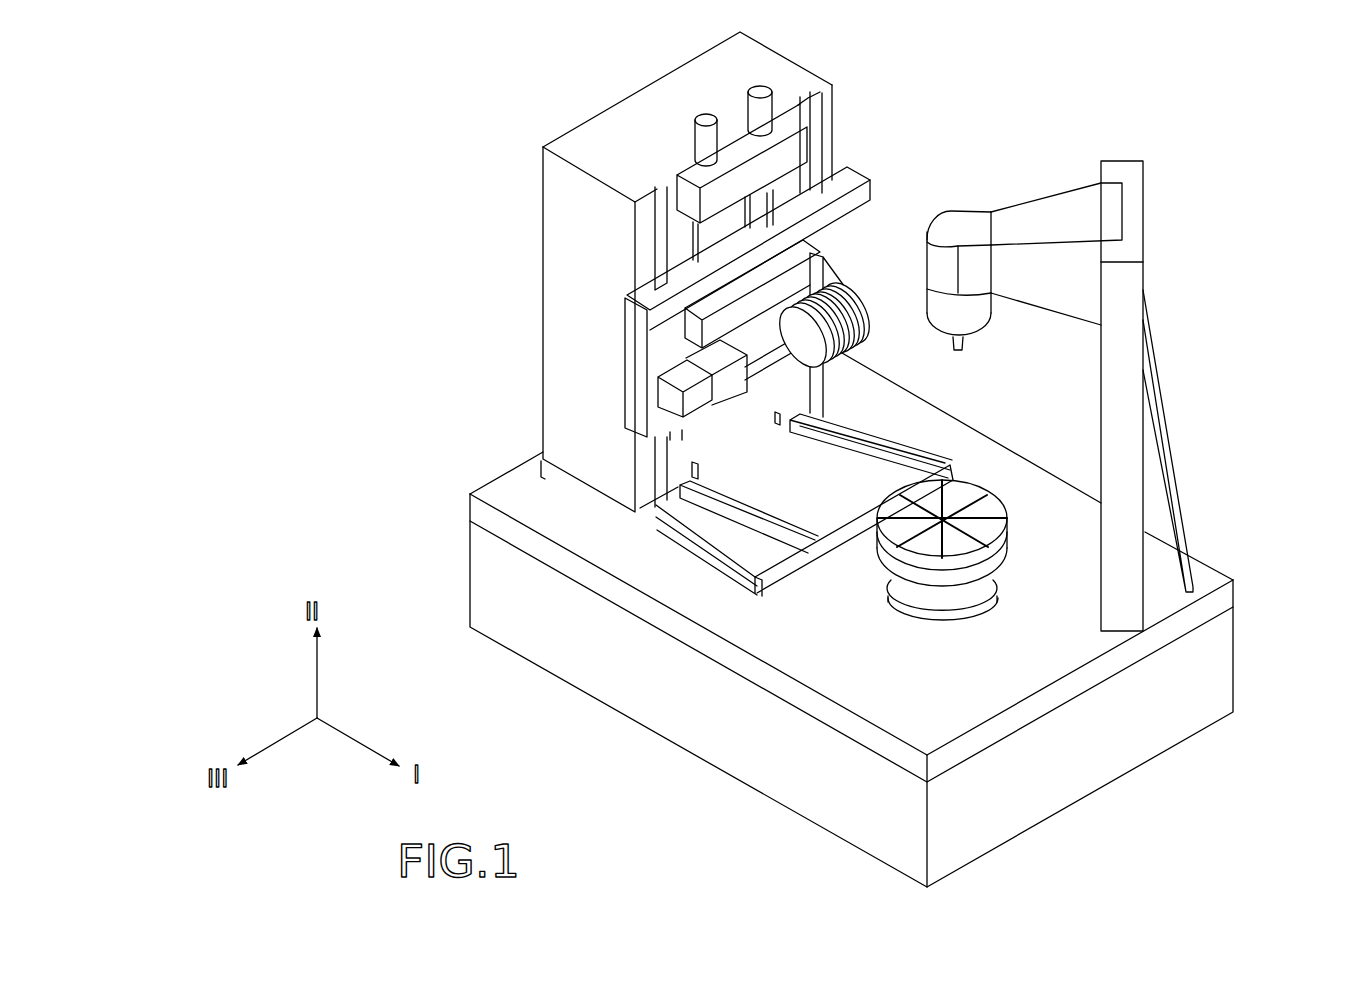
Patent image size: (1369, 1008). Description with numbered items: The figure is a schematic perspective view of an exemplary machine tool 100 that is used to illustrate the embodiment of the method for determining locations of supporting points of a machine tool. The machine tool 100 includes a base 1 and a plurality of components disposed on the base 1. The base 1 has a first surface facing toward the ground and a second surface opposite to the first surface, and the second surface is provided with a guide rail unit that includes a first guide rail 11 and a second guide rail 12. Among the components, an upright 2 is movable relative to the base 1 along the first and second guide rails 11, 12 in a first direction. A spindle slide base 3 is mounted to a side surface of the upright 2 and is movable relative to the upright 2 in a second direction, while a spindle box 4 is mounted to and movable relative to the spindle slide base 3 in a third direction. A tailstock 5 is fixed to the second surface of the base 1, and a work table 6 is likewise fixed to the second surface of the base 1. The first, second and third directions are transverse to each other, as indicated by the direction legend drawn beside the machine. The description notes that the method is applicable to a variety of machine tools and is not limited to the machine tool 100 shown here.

The machine tool 100 is at (1198, 118).
The base 1 is at (1222, 672).
The upright 2 is at (600, 112).
The spindle slide base 3 is at (853, 173).
The spindle box 4 is at (932, 208).
The tailstock 5 is at (1137, 251).
The work table 6 is at (992, 507).
The first guide rail 11 is at (862, 443).
The second guide rail 12 is at (696, 514).